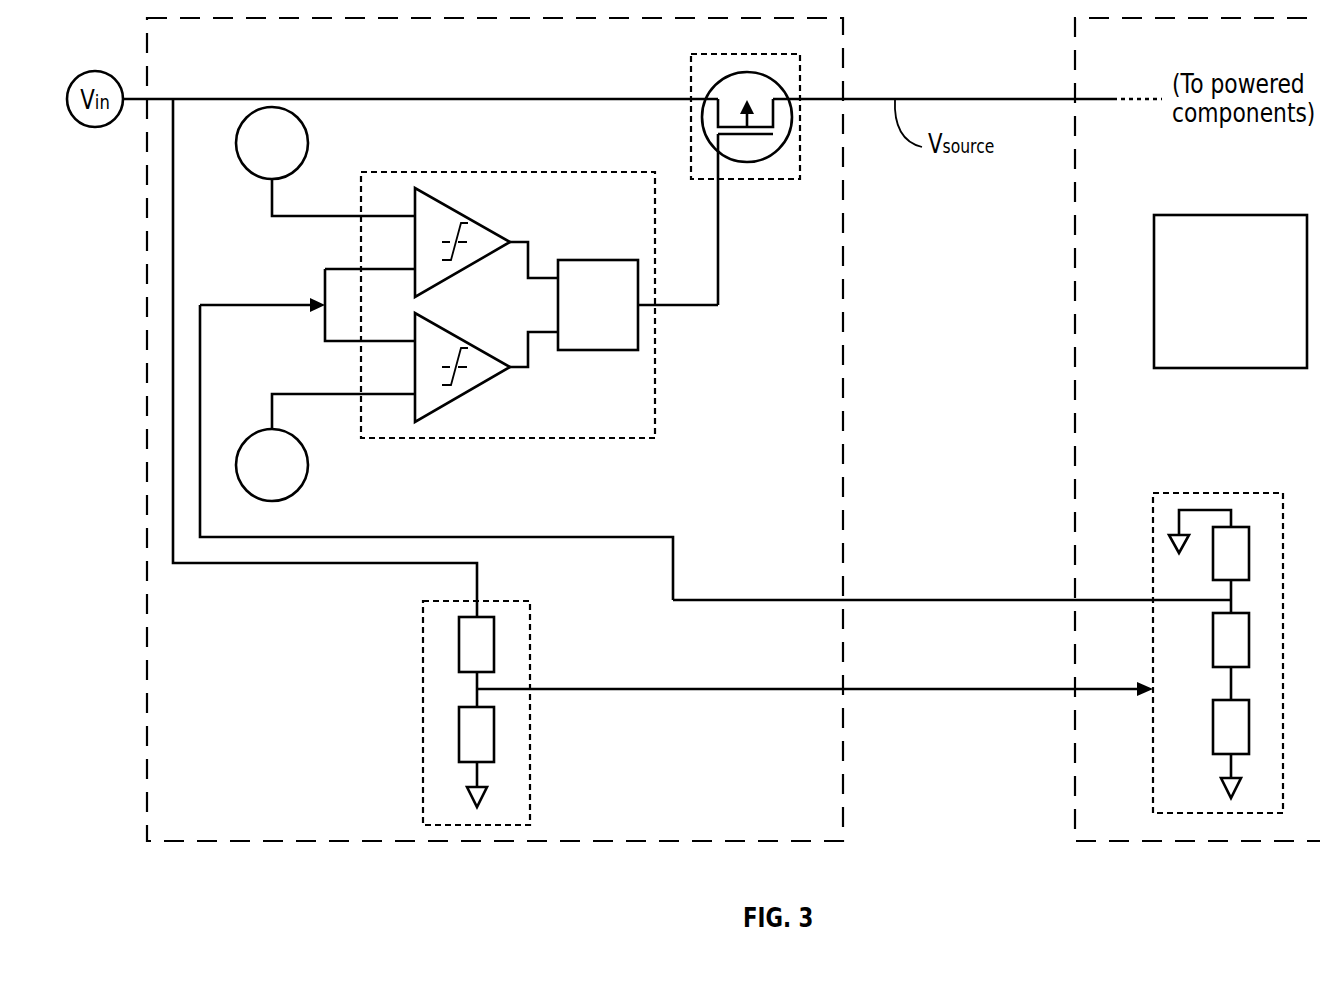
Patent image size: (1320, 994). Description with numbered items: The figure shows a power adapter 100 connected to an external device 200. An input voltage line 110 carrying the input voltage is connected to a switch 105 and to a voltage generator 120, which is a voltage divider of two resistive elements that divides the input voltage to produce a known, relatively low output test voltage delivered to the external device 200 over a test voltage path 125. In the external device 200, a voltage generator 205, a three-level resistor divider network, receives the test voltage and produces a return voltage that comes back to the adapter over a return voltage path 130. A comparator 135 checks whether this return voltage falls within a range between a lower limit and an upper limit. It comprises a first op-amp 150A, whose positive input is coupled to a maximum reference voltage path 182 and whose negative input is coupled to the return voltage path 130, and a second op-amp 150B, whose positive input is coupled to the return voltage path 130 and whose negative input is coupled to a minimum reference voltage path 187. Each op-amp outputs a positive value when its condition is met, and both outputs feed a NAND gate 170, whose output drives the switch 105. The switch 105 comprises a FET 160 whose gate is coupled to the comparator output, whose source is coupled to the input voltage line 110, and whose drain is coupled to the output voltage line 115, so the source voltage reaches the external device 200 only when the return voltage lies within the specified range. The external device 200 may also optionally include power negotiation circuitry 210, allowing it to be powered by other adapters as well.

The power adapter 100 is at (400, 842).
The switch 105 is at (728, 164).
The input voltage line 110 is at (415, 99).
The output voltage line 115 is at (825, 99).
The voltage generator 120 is at (423, 770).
The test voltage path 125 is at (555, 689).
The return voltage path 130 is at (727, 600).
The comparator 135 is at (547, 318).
The op-amp 150A is at (478, 221).
The second op-amp 150B is at (477, 390).
The FET 160 is at (746, 147).
The NAND gate 170 is at (572, 260).
The maximum reference voltage path 182 is at (272, 200).
The minimum reference voltage path 187 is at (298, 393).
The external device 200 is at (1190, 841).
The voltage generator 205 is at (1153, 797).
The power negotiation circuitry 210 is at (1154, 296).